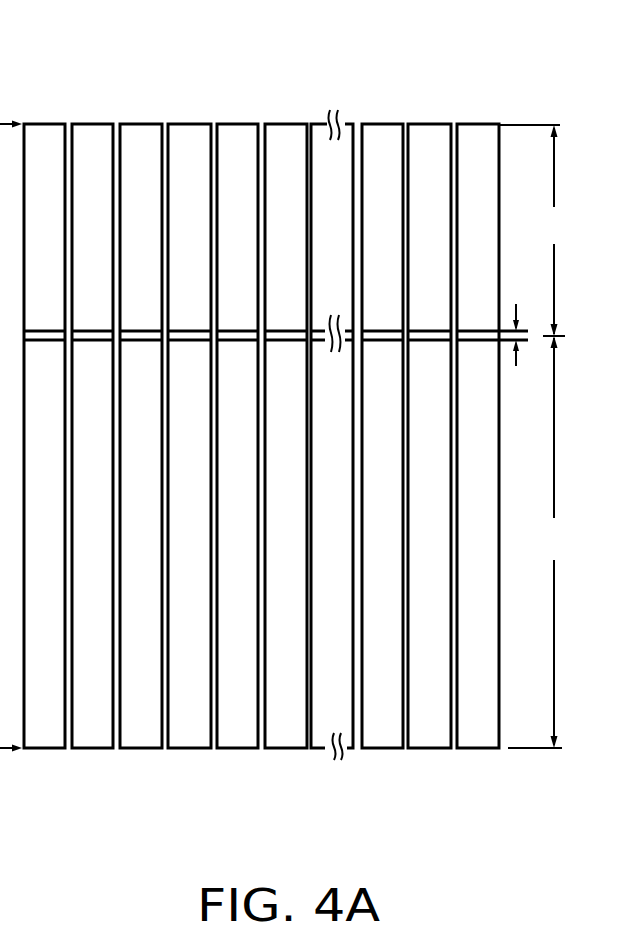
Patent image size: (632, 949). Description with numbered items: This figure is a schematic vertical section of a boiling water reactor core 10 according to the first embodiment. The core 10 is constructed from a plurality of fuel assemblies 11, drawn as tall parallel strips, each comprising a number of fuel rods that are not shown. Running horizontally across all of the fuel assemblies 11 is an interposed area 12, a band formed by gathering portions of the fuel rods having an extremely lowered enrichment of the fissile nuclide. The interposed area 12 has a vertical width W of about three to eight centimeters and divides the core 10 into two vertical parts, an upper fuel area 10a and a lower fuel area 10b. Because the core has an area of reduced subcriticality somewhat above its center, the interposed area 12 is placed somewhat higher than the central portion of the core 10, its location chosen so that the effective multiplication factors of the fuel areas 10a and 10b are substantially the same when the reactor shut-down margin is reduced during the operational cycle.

The reactor core 10 is at (355, 90).
The fuel assembly 11 is at (229, 133).
The interposed area 12 is at (477, 342).
The fuel area 10a is at (538, 230).
The fuel area 10b is at (543, 542).
The vertical width W is at (518, 325).